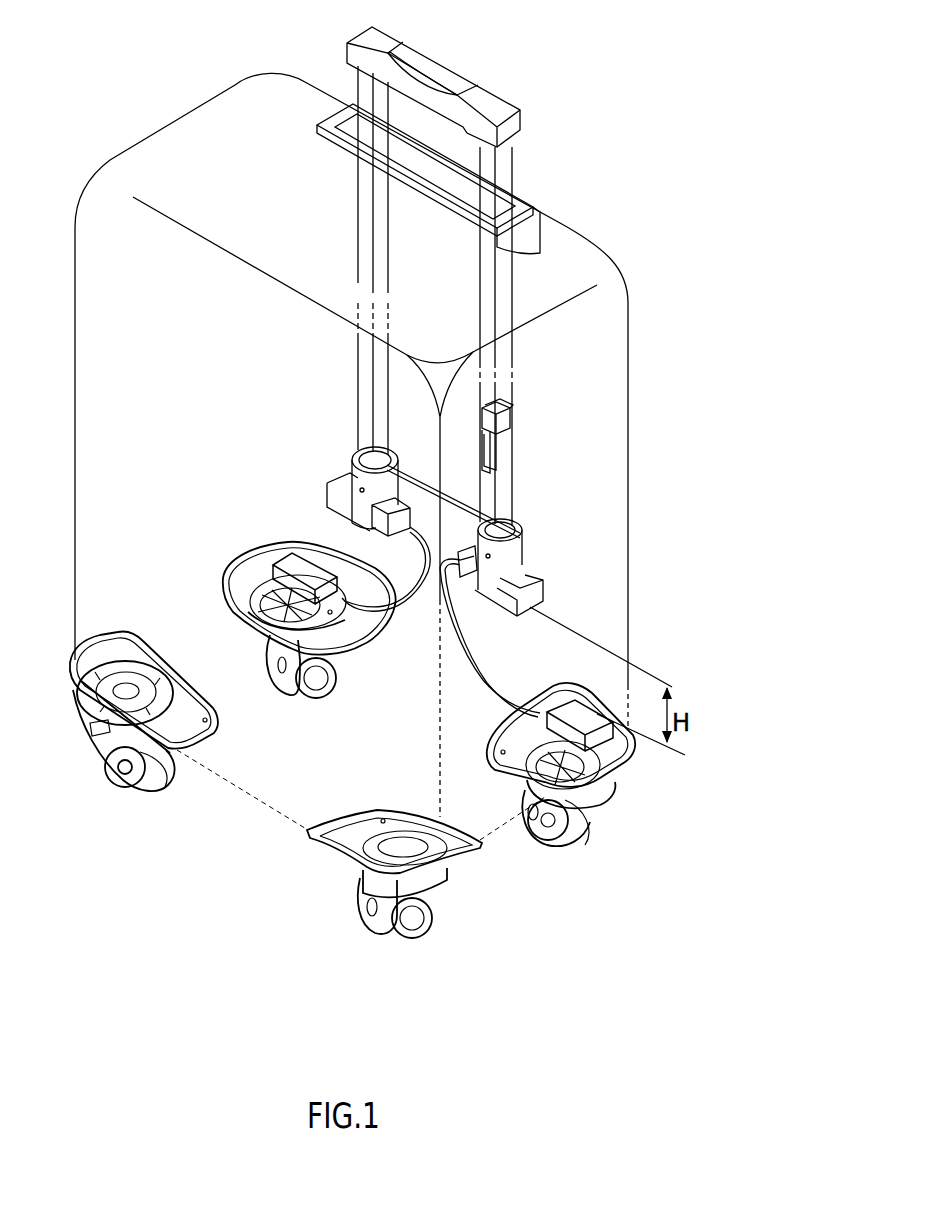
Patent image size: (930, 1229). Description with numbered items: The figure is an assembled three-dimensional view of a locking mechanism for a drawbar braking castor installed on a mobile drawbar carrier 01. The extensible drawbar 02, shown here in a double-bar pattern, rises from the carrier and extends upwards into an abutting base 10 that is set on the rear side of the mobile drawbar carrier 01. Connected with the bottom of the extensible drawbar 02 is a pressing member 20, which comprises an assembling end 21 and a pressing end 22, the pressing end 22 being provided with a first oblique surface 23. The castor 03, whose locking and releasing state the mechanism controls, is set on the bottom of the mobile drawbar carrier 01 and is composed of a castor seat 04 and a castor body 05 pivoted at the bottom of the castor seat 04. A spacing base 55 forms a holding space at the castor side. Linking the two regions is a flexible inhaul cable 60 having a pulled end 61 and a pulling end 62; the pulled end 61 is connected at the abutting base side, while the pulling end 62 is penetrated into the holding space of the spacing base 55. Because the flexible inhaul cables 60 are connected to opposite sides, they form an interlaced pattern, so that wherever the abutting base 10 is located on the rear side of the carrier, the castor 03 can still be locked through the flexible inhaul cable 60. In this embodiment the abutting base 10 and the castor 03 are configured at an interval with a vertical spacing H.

The mobile drawbar carrier 01 is at (657, 324).
The extensible drawbar 02 is at (508, 182).
The abutting base 10 is at (504, 517).
The pressing member 20 is at (529, 442).
The assembling end 21 is at (507, 412).
The pressing end 22 is at (497, 453).
The first oblique surface 23 is at (490, 467).
The castor 03 is at (456, 687).
The castor seat 04 is at (343, 633).
The castor body 05 is at (323, 675).
The spacing base 55 is at (613, 767).
The flexible inhaul cable 60 is at (403, 570).
The pulled end 61 is at (400, 505).
The pulling end 62 is at (300, 563).